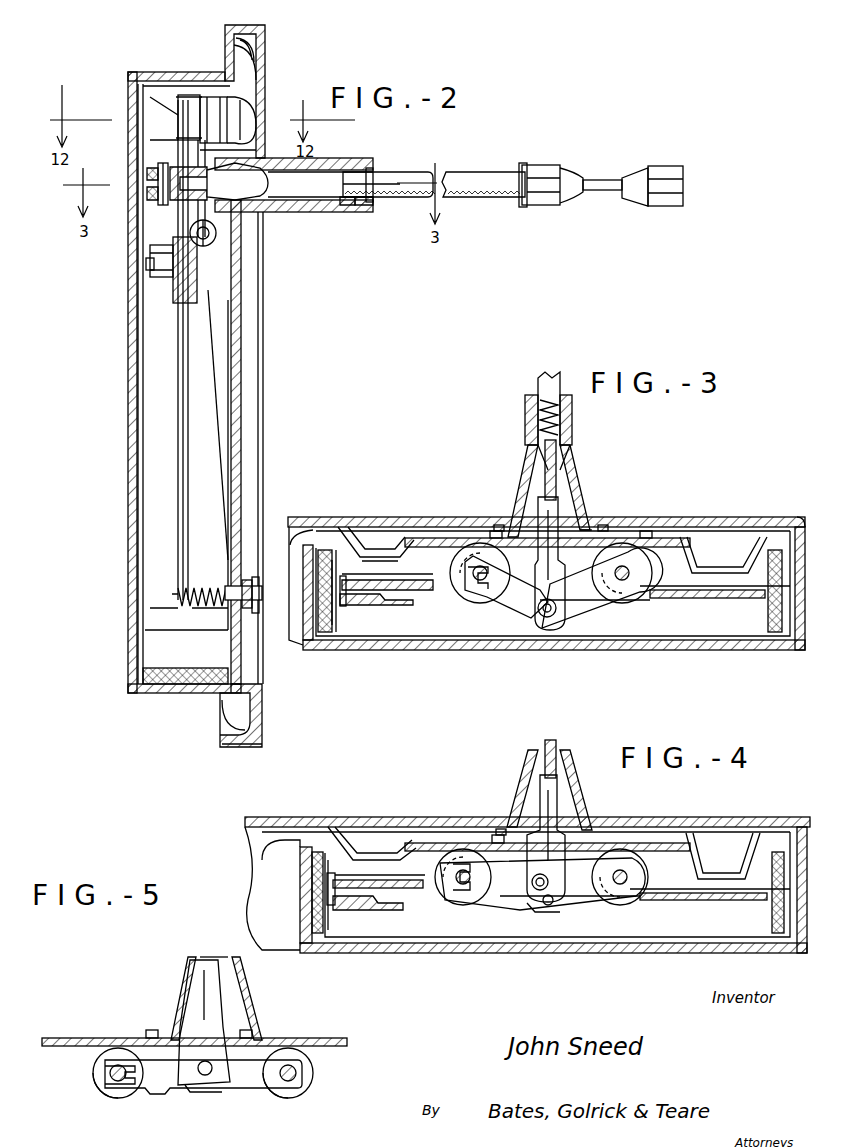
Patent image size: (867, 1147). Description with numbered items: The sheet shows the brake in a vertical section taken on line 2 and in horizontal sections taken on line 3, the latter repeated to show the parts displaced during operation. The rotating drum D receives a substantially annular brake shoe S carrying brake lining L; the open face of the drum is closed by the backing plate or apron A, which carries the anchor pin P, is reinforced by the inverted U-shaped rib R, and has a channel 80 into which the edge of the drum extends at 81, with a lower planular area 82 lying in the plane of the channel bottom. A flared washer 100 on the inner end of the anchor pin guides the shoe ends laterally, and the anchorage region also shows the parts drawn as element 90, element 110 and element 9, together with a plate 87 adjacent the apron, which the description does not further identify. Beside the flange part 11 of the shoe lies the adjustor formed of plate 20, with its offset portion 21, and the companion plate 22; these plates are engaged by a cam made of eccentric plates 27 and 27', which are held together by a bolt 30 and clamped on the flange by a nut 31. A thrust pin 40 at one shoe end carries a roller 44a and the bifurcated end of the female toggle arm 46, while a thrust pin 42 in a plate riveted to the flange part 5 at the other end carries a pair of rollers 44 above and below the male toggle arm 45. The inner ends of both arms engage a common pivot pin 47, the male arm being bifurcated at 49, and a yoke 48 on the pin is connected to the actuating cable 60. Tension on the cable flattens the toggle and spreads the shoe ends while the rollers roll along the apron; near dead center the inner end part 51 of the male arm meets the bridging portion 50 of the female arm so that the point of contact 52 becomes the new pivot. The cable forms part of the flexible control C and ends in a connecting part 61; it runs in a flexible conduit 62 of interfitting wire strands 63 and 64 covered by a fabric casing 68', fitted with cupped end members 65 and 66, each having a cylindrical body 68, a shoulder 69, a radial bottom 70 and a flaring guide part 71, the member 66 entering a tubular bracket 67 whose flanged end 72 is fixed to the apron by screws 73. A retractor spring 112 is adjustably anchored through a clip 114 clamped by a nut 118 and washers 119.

In FIG. 2, the section line 2 is at (170, 660).
In FIG. 3, the section line 3 is at (332, 608).
In FIG. 3, the flange part 5 is at (750, 592).
In FIG. 4, the flange part 5 is at (755, 896).
In FIG. 2, the rod 9 is at (188, 478).
In FIG. 3, the flange part 11 is at (390, 580).
In FIG. 4, the flange part 11 is at (400, 875).
In FIG. 3, the adjustor plate 20 is at (392, 590).
In FIG. 4, the adjustor plate 20 is at (385, 888).
In FIG. 3, the offset portion 21 is at (395, 605).
In FIG. 4, the offset portion 21 is at (392, 910).
In FIG. 3, the adjustor plate 22 is at (347, 578).
In FIG. 4, the adjustor plate 22 is at (340, 878).
In FIG. 2, the eccentric cam plate 27 is at (134, 275).
In FIG. 2, the eccentric cam plate 27' is at (257, 421).
In FIG. 2, the bolt 30 is at (150, 258).
In FIG. 2, the nut 31 is at (150, 266).
In FIG. 3, the thrust pin 40 is at (470, 598).
In FIG. 4, the thrust pin 40 is at (463, 877).
In FIG. 5, the thrust pin 40 is at (100, 1075).
In FIG. 3, the thrust pin 42 is at (640, 568).
In FIG. 4, the thrust pin 42 is at (640, 876).
In FIG. 5, the thrust pin 42 is at (312, 1072).
In FIG. 3, the rollers 44 is at (638, 597).
In FIG. 4, the rollers 44 is at (635, 902).
In FIG. 5, the rollers 44 is at (310, 1088).
In FIG. 3, the roller 44a is at (462, 590).
In FIG. 4, the roller 44a is at (445, 897).
In FIG. 5, the roller 44a is at (108, 1095).
In FIG. 3, the male toggle arm 45 is at (600, 597).
In FIG. 4, the male toggle arm 45 is at (585, 898).
In FIG. 5, the male toggle arm 45 is at (203, 1077).
In FIG. 2, the female toggle arm 46 is at (152, 172).
In FIG. 3, the female toggle arm 46 is at (500, 602).
In FIG. 4, the female toggle arm 46 is at (470, 897).
In FIG. 5, the female toggle arm 46 is at (150, 1090).
In FIG. 2, the pivot pin 47 is at (160, 200).
In FIG. 3, the pivot pin 47 is at (547, 618).
In FIG. 4, the pivot pin 47 is at (550, 905).
In FIG. 2, the yoke 48 is at (245, 168).
In FIG. 3, the yoke 48 is at (552, 530).
In FIG. 4, the yoke 48 is at (558, 808).
In FIG. 5, the yoke 48 is at (220, 985).
In FIG. 3, the bifurcated end 49 is at (555, 620).
In FIG. 5, the bifurcated end 49 is at (205, 1080).
In FIG. 3, the connecting portion 50 is at (540, 615).
In FIG. 4, the connecting portion 50 is at (520, 900).
In FIG. 4, the inner end part 51 is at (540, 890).
In FIG. 4, the point of contact 52 is at (530, 912).
In FIG. 5, the point of contact 52 is at (186, 1095).
In FIG. 2, the actuating cable 60 is at (300, 160).
In FIG. 3, the actuating cable 60 is at (555, 467).
In FIG. 4, the actuating cable 60 is at (552, 752).
In FIG. 5, the actuating cable 60 is at (215, 957).
In FIG. 2, the connecting part 61 is at (640, 170).
In FIG. 2, the flexible conduit 62 is at (490, 200).
In FIG. 3, the flexible conduit 62 is at (560, 378).
In FIG. 3, the wire strands 63 is at (577, 420).
In FIG. 3, the wire strands 64 is at (572, 410).
In FIG. 2, the cupped end fitting 65 is at (545, 207).
In FIG. 2, the cupped end fitting 66 is at (372, 208).
In FIG. 3, the cupped end fitting 66 is at (527, 400).
In FIG. 2, the tubular bracket 67 is at (290, 212).
In FIG. 3, the tubular bracket 67 is at (583, 485).
In FIG. 4, the tubular bracket 67 is at (578, 790).
In FIG. 5, the tubular bracket 67 is at (250, 1000).
In FIG. 3, the cylindrical body part 68 is at (529, 420).
In FIG. 2, the fabric casing 68' is at (349, 217).
In FIG. 2, the bead or shoulder 69 is at (372, 205).
In FIG. 3, the radial bottom part 70 is at (575, 450).
In FIG. 2, the flaring part 71 is at (312, 212).
In FIG. 3, the flaring part 71 is at (558, 455).
In FIG. 3, the flanged and punched end 72 is at (492, 533).
In FIG. 3, the screws 73 is at (500, 525).
In FIG. 2, the channel 80 is at (256, 716).
In FIG. 2, the drum edge 81 is at (222, 745).
In FIG. 3, the lower planular area 82 is at (800, 520).
In FIG. 3, the plate 87 is at (460, 538).
In FIG. 4, the plate 87 is at (420, 843).
In FIG. 5, the plate 87 is at (130, 1038).
In FIG. 2, the cylinder 90 is at (215, 90).
In FIG. 2, the flared washer 100 is at (178, 108).
In FIG. 2, the roller 110 is at (215, 232).
In FIG. 2, the retractor spring 112 is at (205, 585).
In FIG. 2, the clip 114 is at (244, 615).
In FIG. 2, the nut 118 is at (245, 592).
In FIG. 2, the washers 119 is at (252, 612).
In FIG. 2, the backing plate or apron A is at (263, 57).
In FIG. 3, the backing plate or apron A is at (330, 520).
In FIG. 4, the backing plate or apron A is at (800, 820).
In FIG. 2, the flexible control C is at (410, 178).
In FIG. 2, the rotating drum D is at (128, 517).
In FIG. 3, the rotating drum D is at (745, 650).
In FIG. 4, the rotating drum D is at (325, 953).
In FIG. 2, the brake lining L is at (152, 686).
In FIG. 3, the brake lining L is at (326, 630).
In FIG. 4, the brake lining L is at (315, 893).
In FIG. 2, the anchor pin P is at (250, 110).
In FIG. 2, the rib R is at (228, 345).
In FIG. 3, the rib R is at (395, 553).
In FIG. 4, the rib R is at (398, 853).
In FIG. 2, the brake shoe S is at (180, 418).
In FIG. 4, the brake shoe S is at (330, 925).